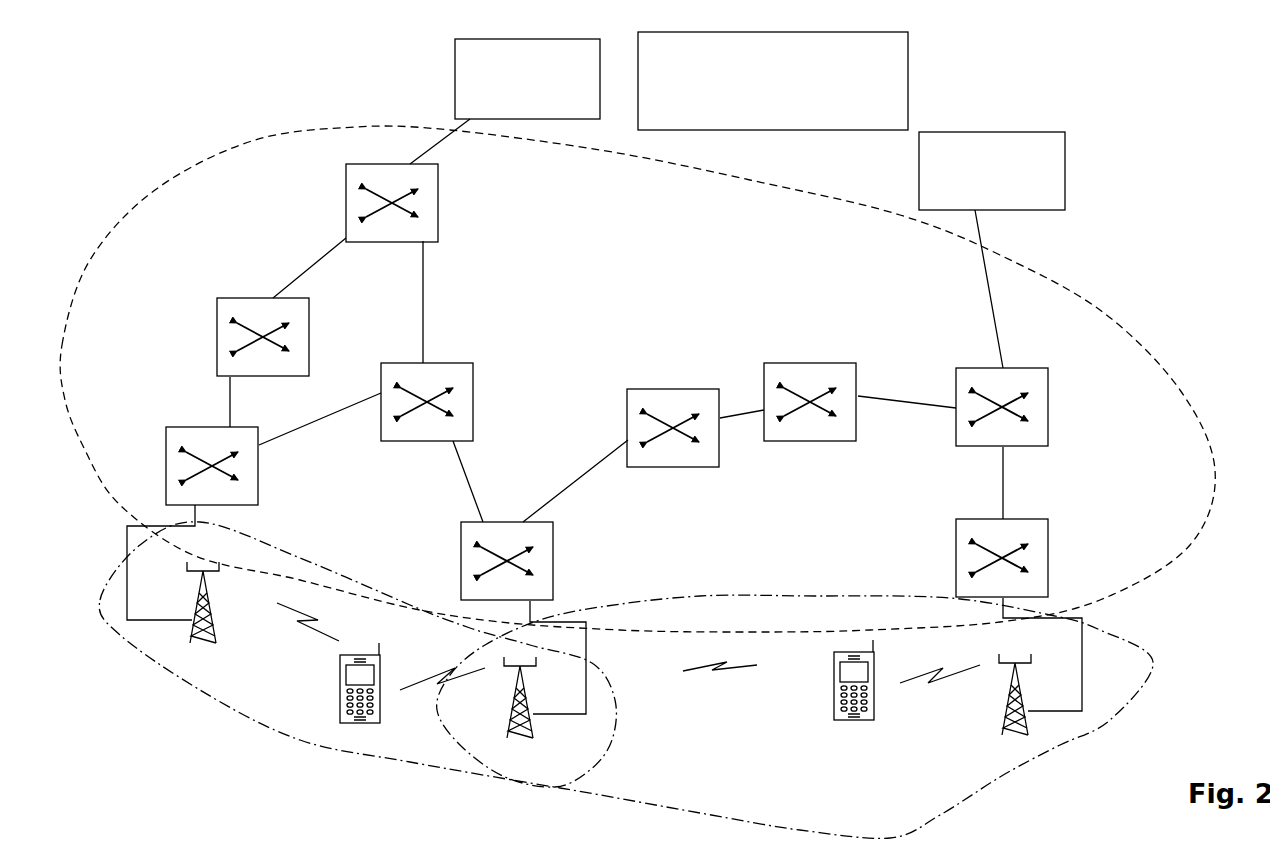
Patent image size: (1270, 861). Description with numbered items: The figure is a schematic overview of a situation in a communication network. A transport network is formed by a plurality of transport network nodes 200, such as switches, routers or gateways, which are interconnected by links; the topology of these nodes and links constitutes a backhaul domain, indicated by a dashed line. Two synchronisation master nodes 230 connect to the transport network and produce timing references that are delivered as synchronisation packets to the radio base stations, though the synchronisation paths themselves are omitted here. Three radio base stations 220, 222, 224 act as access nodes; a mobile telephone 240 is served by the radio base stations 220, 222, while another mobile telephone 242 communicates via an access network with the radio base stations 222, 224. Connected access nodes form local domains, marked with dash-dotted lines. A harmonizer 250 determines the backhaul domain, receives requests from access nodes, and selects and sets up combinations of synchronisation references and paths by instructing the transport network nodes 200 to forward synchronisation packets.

The transport network nodes 200 is at (346, 204).
The radio base station 220 is at (215, 643).
The radio base station 222 is at (537, 731).
The radio base station 224 is at (1030, 727).
The synchronisation master nodes 230 is at (455, 80).
The mobile telephone 240 is at (344, 716).
The mobile telephone 242 is at (838, 713).
The harmonizer 250 is at (908, 62).